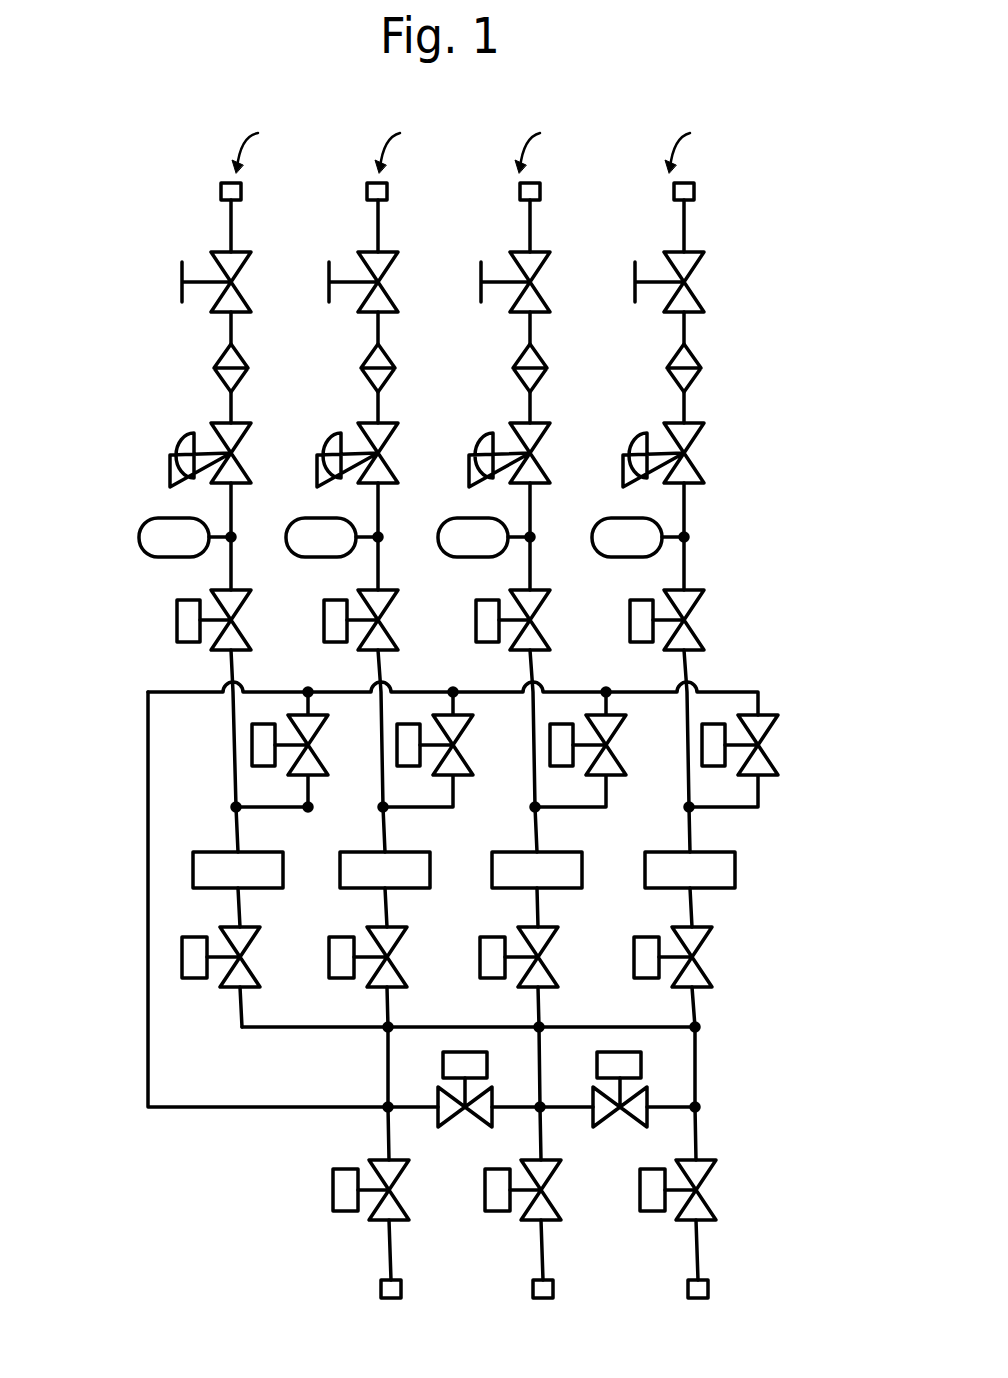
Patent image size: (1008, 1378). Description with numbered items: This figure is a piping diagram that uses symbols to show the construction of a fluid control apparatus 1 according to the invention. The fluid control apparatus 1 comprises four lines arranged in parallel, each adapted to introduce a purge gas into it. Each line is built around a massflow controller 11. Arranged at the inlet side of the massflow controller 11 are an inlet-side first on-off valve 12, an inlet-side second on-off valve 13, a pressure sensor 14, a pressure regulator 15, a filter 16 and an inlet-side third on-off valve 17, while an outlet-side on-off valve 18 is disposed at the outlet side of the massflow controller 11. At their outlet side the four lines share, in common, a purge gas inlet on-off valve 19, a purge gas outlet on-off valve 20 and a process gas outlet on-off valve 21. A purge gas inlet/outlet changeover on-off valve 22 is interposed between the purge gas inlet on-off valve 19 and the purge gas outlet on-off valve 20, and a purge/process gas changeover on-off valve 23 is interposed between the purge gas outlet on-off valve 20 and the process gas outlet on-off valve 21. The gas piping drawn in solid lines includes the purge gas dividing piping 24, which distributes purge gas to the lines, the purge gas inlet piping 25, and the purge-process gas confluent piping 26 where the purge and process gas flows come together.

The fluid control apparatus 1 is at (774, 398).
The massflow controller 11 is at (193, 872).
The inlet-side first on-off valve 12 is at (252, 758).
The inlet-side second on-off valve 13 is at (177, 620).
The pressure sensor 14 is at (140, 537).
The pressure regulator 15 is at (178, 446).
The filter 16 is at (214, 360).
The inlet-side third on-off valve 17 is at (182, 282).
The outlet-side on-off valve 18 is at (182, 960).
The purge gas inlet on-off valve 19 is at (343, 1213).
The purge gas outlet on-off valve 20 is at (532, 1222).
The process gas outlet on-off valve 21 is at (688, 1222).
The purge gas inlet/outlet changeover on-off valve 22 is at (432, 1096).
The purge/process gas changeover on-off valve 23 is at (592, 1100).
The purge gas dividing piping 24 is at (178, 693).
The purge gas inlet piping 25 is at (148, 1090).
The purge-process gas confluent piping 26 is at (660, 1028).